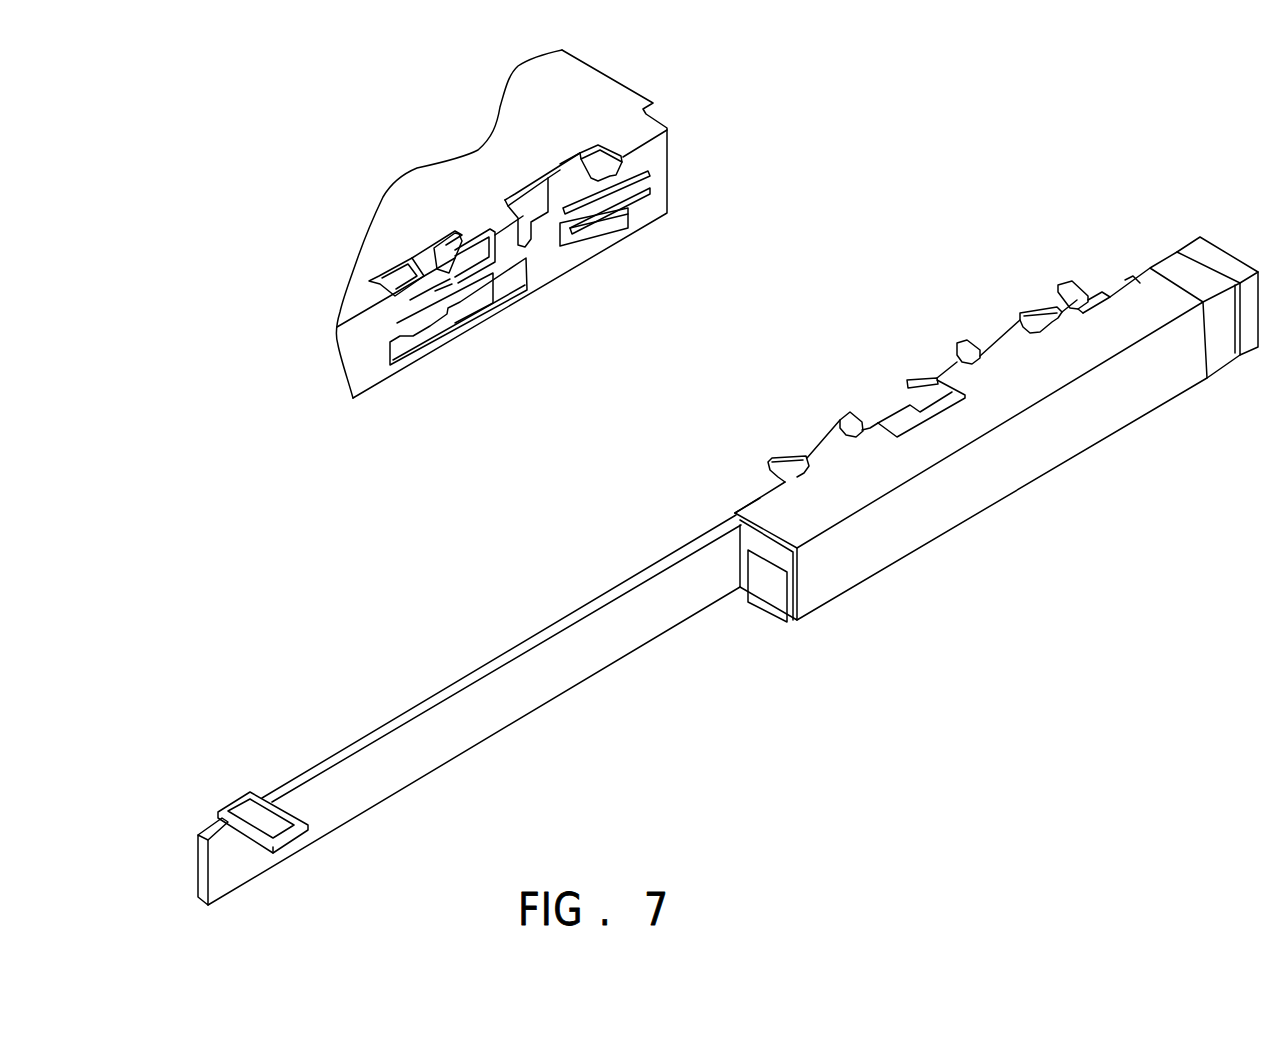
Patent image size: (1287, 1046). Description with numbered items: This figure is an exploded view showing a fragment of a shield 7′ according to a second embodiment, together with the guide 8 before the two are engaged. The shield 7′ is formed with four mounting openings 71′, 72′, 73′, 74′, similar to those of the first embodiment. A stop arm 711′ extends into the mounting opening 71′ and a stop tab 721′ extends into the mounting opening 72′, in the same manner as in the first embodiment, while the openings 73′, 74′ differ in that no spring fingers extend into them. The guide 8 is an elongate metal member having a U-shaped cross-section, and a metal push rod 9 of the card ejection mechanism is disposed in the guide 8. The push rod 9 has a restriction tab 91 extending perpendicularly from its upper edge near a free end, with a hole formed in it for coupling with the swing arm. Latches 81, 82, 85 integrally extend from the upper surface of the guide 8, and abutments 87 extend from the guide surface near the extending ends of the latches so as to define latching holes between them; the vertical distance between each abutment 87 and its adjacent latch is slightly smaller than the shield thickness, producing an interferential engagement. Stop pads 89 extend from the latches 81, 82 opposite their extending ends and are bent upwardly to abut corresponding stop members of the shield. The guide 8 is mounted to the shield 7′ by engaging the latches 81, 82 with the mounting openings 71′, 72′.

The shield 7′ is at (562, 106).
The mounting opening 71′ is at (470, 263).
The stop arm 711′ is at (445, 268).
The mounting opening 72′ is at (607, 163).
The stop tab 721′ is at (568, 170).
The mounting opening 73′ is at (436, 335).
The mounting opening 74′ is at (613, 232).
The guide 8 is at (1032, 450).
The latch 81 is at (807, 447).
The latch 82 is at (944, 362).
The latch 85 is at (1047, 302).
The abutment 87 is at (1024, 328).
The stop pad 89 is at (848, 413).
The push rod 9 is at (582, 658).
The restriction tab 91 is at (276, 855).